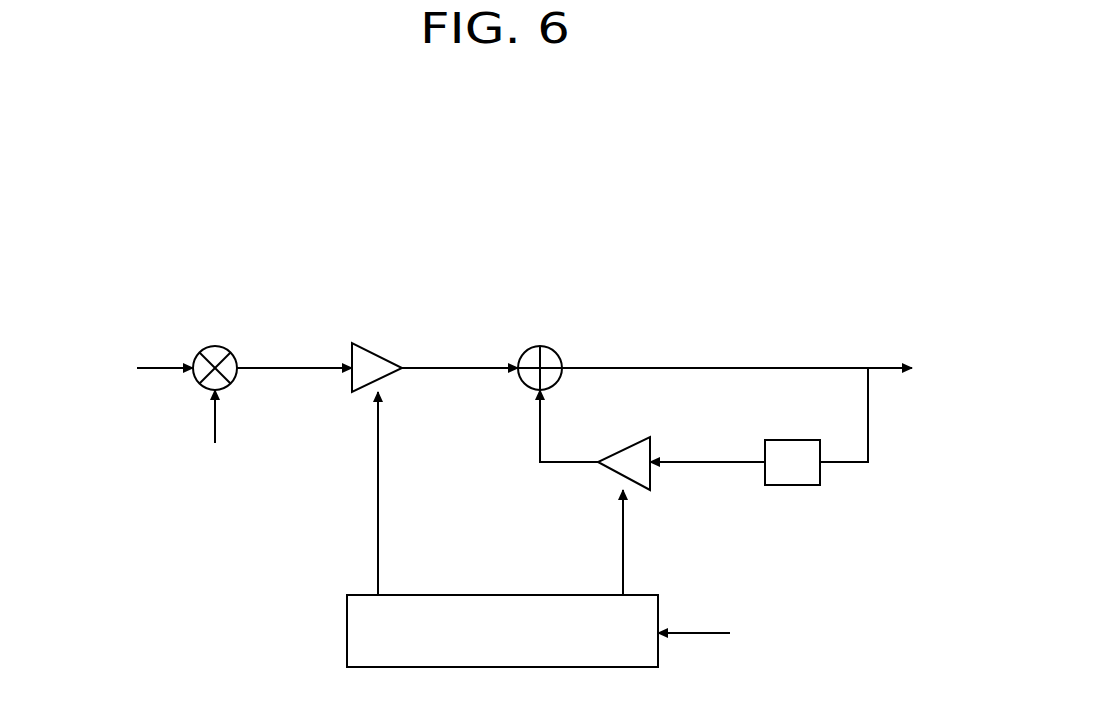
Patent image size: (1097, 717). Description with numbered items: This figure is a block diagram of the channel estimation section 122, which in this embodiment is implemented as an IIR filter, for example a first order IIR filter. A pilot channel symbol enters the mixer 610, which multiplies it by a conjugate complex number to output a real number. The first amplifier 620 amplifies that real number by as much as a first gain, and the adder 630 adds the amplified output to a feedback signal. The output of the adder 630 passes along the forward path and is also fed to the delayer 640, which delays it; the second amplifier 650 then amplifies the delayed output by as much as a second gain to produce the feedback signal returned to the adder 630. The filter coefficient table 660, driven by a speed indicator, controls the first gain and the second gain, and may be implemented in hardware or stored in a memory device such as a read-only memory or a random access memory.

The channel estimation section 122 is at (515, 235).
The mixer 610 is at (215, 346).
The first amplifier 620 is at (360, 341).
The adder 630 is at (540, 346).
The delayer 640 is at (790, 487).
The second amplifier 650 is at (650, 484).
The filter coefficient table 660 is at (503, 594).